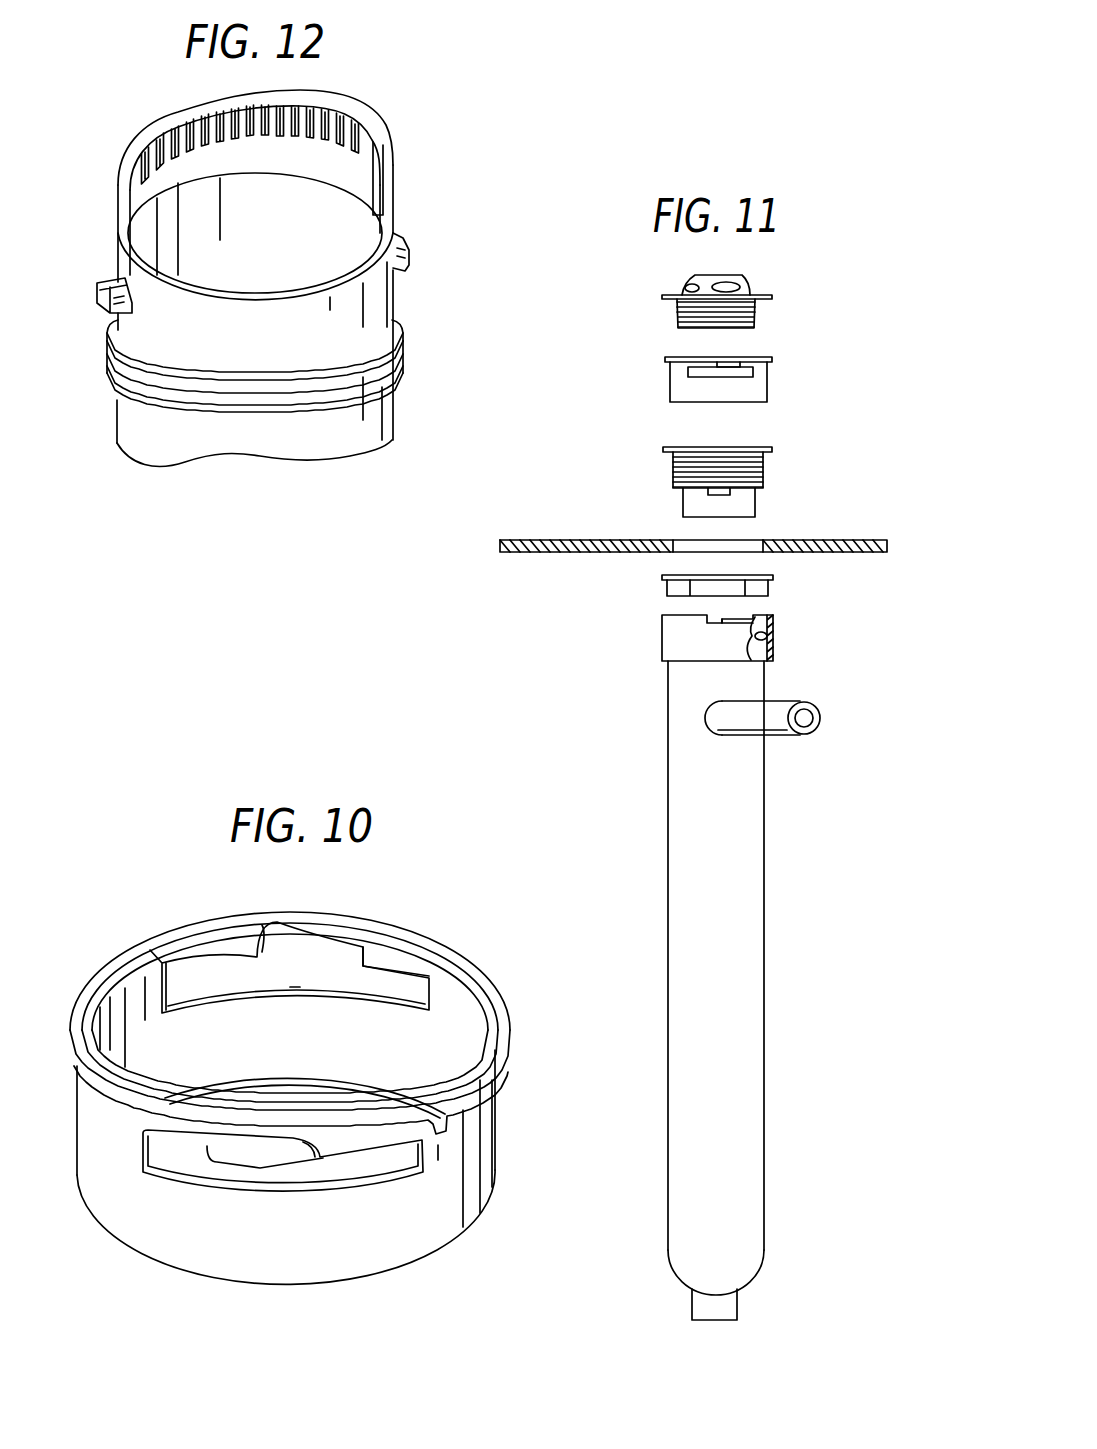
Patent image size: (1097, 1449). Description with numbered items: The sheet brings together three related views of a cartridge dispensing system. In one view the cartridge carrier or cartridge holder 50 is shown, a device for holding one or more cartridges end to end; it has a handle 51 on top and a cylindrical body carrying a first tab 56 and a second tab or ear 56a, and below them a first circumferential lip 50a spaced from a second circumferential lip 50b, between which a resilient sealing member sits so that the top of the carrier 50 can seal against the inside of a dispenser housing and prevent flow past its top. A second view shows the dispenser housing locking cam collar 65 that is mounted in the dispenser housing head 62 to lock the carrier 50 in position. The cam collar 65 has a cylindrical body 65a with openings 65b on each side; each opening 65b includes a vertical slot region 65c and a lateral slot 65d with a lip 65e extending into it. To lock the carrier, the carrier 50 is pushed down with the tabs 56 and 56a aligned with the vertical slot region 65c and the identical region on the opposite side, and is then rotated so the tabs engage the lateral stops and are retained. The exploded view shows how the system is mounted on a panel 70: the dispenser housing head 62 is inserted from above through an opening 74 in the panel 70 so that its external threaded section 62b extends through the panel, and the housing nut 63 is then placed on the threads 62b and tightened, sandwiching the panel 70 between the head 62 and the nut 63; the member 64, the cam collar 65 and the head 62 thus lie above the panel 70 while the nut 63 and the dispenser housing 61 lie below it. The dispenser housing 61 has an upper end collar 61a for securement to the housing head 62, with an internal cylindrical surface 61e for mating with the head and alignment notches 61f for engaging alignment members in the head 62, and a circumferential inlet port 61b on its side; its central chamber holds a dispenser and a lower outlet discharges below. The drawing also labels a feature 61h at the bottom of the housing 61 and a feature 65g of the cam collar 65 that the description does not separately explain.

In FIG. 12, the cartridge carrier 50 is at (409, 136).
In FIG. 12, the first circumferential lip 50a is at (398, 312).
In FIG. 12, the second circumferential lip 50b is at (402, 343).
In FIG. 12, the handle 51 is at (352, 98).
In FIG. 12, the first tab 56 is at (405, 250).
In FIG. 12, the ear 56a is at (97, 285).
In FIG. 11, the dispenser housing 61 is at (666, 793).
In FIG. 11, the upper end collar 61a is at (677, 650).
In FIG. 11, the circumferential inlet port 61b is at (816, 705).
In FIG. 11, the internal cylindrical surface 61e is at (684, 604).
In FIG. 11, the alignment notches 61f is at (718, 613).
In FIG. 11, the bottom nub 61h is at (736, 1306).
In FIG. 11, the dispenser housing head 62 is at (682, 448).
In FIG. 11, the external threaded section 62b is at (764, 470).
In FIG. 11, the housing nut 63 is at (660, 577).
In FIG. 11, the member 64 is at (750, 272).
In FIG. 11, the dispenser housing locking cam collar 65 is at (668, 360).
In FIG. 10, the dispenser housing locking cam collar 65 is at (484, 944).
In FIG. 10, the cylindrical body 65a is at (484, 1149).
In FIG. 10, the openings 65b is at (190, 984).
In FIG. 10, the vertical slot region 65c is at (227, 961).
In FIG. 10, the lateral slot 65d is at (306, 978).
In FIG. 10, the lip 65e is at (363, 957).
In FIG. 10, the floor 65g is at (445, 1027).
In FIG. 11, the panel 70 is at (558, 553).
In FIG. 11, the opening 74 is at (672, 538).